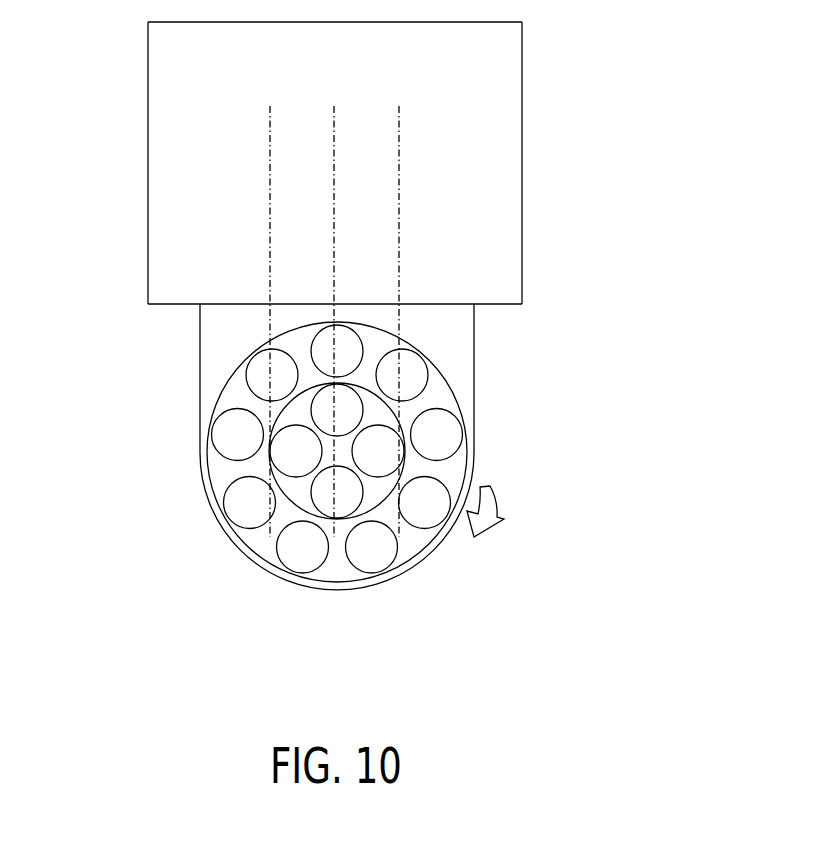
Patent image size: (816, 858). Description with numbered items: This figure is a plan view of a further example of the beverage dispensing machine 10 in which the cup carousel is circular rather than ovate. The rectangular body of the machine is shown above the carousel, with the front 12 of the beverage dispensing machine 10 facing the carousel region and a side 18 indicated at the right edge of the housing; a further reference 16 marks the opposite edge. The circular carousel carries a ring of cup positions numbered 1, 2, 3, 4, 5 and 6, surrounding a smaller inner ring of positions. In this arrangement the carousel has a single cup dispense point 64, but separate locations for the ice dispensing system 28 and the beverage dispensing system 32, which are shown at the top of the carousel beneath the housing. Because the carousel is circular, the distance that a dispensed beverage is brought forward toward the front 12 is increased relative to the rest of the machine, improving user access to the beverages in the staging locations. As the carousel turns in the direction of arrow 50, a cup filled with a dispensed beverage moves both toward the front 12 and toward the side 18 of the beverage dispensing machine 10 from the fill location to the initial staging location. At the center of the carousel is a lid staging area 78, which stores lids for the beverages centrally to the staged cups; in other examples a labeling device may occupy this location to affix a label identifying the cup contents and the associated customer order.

The beverage dispensing machine 10 is at (547, 67).
The front 12 is at (328, 620).
The housing 16 is at (124, 278).
The side 18 is at (545, 272).
The ice dispensing system 28 is at (349, 303).
The beverage dispensing system 32 is at (417, 328).
The cup dispense point 64 is at (258, 326).
The lid staging area 78 is at (347, 487).
The arrow 50 is at (495, 508).
The pin position 1 is at (437, 435).
The pin position 2 is at (425, 503).
The pin position 3 is at (372, 547).
The pin position 4 is at (303, 547).
The pin position 5 is at (250, 503).
The pin position 6 is at (238, 435).